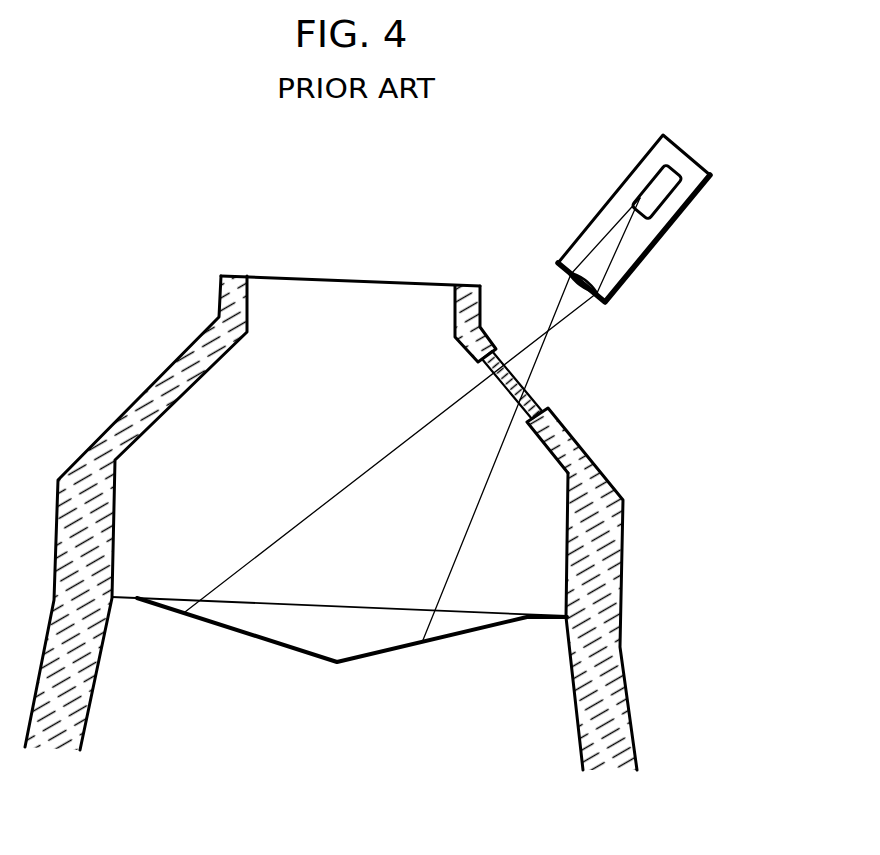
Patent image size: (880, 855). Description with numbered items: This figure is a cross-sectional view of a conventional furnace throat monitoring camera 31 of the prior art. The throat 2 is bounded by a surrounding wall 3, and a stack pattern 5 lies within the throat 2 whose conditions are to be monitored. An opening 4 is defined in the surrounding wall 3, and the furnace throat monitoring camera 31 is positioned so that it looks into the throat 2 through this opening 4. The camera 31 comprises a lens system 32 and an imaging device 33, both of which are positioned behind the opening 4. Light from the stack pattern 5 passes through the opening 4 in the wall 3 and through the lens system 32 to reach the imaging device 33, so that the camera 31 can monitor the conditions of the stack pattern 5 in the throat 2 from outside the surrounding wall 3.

The throat 2 is at (393, 308).
The surrounding wall 3 is at (625, 540).
The opening 4 is at (498, 387).
The stack pattern 5 is at (253, 637).
The furnace throat monitoring camera 31 is at (650, 293).
The lens system 32 is at (580, 292).
The imaging device 33 is at (655, 195).